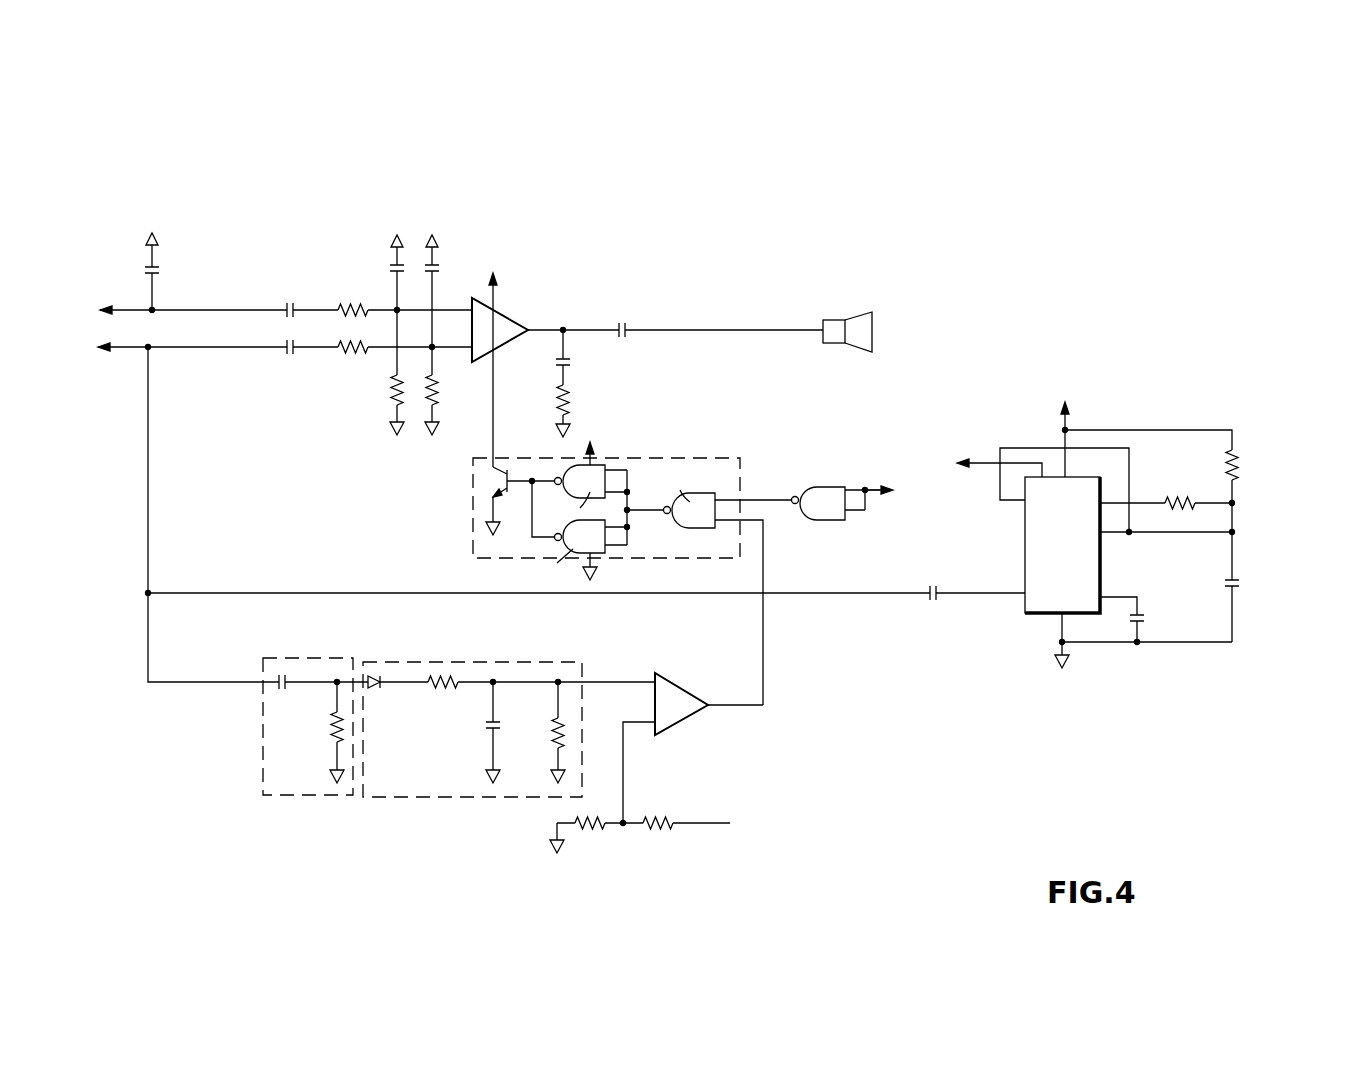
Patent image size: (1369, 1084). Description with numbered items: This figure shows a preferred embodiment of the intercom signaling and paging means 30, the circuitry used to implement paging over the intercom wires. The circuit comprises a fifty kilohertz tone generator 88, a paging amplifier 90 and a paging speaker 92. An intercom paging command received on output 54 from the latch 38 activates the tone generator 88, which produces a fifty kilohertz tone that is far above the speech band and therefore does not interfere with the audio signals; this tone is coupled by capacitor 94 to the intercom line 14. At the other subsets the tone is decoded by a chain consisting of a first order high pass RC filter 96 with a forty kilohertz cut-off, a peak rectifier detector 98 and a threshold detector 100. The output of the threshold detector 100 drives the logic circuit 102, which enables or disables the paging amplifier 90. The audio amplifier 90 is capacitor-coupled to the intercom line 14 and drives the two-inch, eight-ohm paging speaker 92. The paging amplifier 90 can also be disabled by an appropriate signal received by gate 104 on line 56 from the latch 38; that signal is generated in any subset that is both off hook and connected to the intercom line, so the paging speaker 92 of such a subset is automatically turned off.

The second pair of wires 14 is at (266, 293).
The intercom signaling and paging means 30 is at (773, 265).
The latch 38 is at (903, 477).
The output 54 is at (978, 463).
The line 56 is at (865, 489).
The tone generator 88 is at (1043, 591).
The paging amplifier 90 is at (511, 320).
The paging speaker 92 is at (848, 320).
The capacitor 94 is at (928, 600).
The high pass RC filter 96 is at (279, 779).
The peak rectifier detector 98 is at (445, 775).
The threshold detector 100 is at (680, 708).
The logic circuit 102 is at (483, 512).
The gate 104 is at (817, 509).